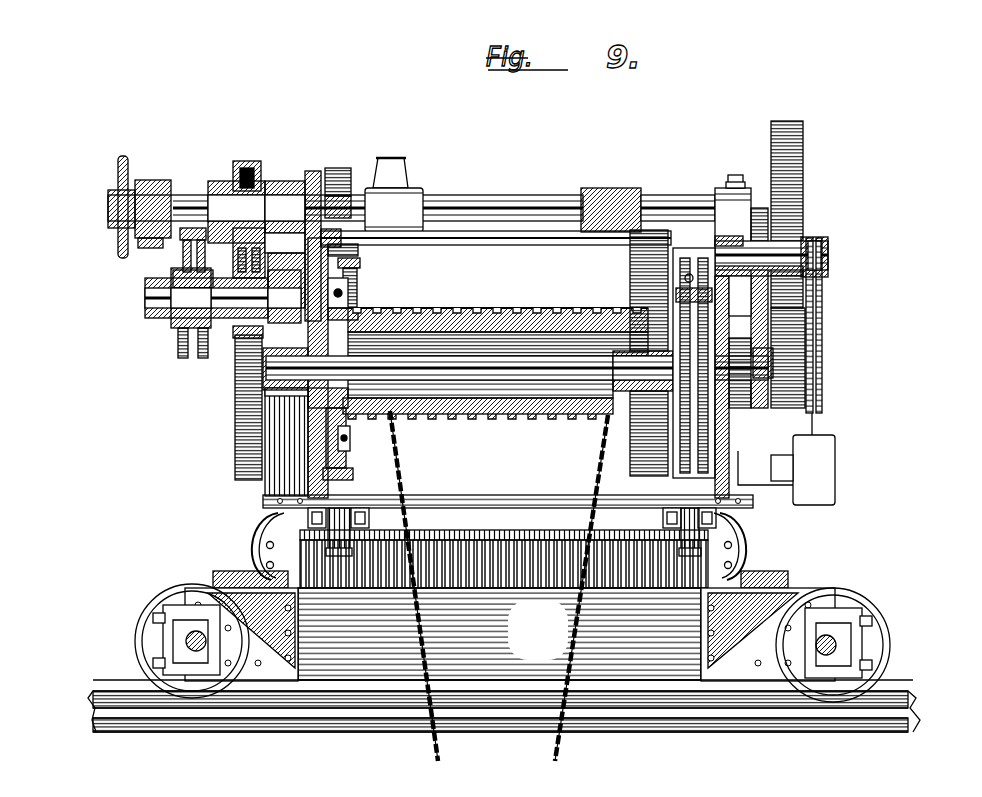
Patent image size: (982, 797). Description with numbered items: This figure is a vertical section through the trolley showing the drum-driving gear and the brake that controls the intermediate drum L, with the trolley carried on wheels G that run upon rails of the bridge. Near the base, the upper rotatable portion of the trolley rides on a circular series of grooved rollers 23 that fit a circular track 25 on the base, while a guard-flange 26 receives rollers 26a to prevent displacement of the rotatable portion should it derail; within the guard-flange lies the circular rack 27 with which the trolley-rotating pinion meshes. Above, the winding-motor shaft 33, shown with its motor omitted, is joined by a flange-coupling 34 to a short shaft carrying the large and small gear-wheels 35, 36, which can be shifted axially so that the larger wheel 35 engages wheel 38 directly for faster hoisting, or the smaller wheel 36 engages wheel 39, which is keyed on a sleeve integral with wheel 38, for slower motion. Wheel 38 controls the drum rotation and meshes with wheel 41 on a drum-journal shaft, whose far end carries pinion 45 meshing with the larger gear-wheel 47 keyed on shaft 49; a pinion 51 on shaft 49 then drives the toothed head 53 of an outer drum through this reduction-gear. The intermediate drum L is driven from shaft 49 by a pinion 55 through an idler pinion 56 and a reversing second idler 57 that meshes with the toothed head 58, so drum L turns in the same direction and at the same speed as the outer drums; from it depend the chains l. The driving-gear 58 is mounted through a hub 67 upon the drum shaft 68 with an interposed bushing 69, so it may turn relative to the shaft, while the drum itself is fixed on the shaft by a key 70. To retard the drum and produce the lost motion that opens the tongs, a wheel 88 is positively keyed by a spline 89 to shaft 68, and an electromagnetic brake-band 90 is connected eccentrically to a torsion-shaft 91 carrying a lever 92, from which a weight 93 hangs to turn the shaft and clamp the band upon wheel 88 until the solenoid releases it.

The winding-motor shaft 33 is at (367, 190).
The flange-coupling 34 is at (306, 168).
The large gear-wheel 35 is at (243, 160).
The small gear-wheel 36 is at (213, 173).
The gear-wheel 38 is at (230, 248).
The gear-wheel 39 is at (180, 220).
The gear-wheel 41 is at (228, 426).
The pinion 45 is at (792, 362).
The gear-wheel 47 is at (796, 153).
The shaft 49 is at (552, 232).
The pinion 51 is at (641, 182).
The gear-wheel 53 is at (628, 283).
The pinion 55 is at (350, 243).
The idler pinion 56 is at (340, 168).
The second idler 57 is at (352, 252).
The toothed head 58 is at (352, 283).
The hub 67 is at (318, 386).
The shaft 68 is at (252, 362).
The bushing 69 is at (320, 327).
The key 70 is at (398, 374).
The wheel 88 is at (670, 281).
The spline 89 is at (602, 372).
The brake-band 90 is at (700, 447).
The torsion-shaft 91 is at (767, 250).
The lever 92 is at (822, 248).
The weight 93 is at (786, 470).
The grooved rollers 23 is at (236, 519).
The circular track 25 is at (220, 565).
The guard-flange 26 is at (530, 525).
The rollers 26a is at (638, 512).
The circular rack 27 is at (482, 550).
The wheels G is at (124, 643).
The rail A is at (92, 685).
The drum L is at (498, 315).
The chains l is at (499, 590).